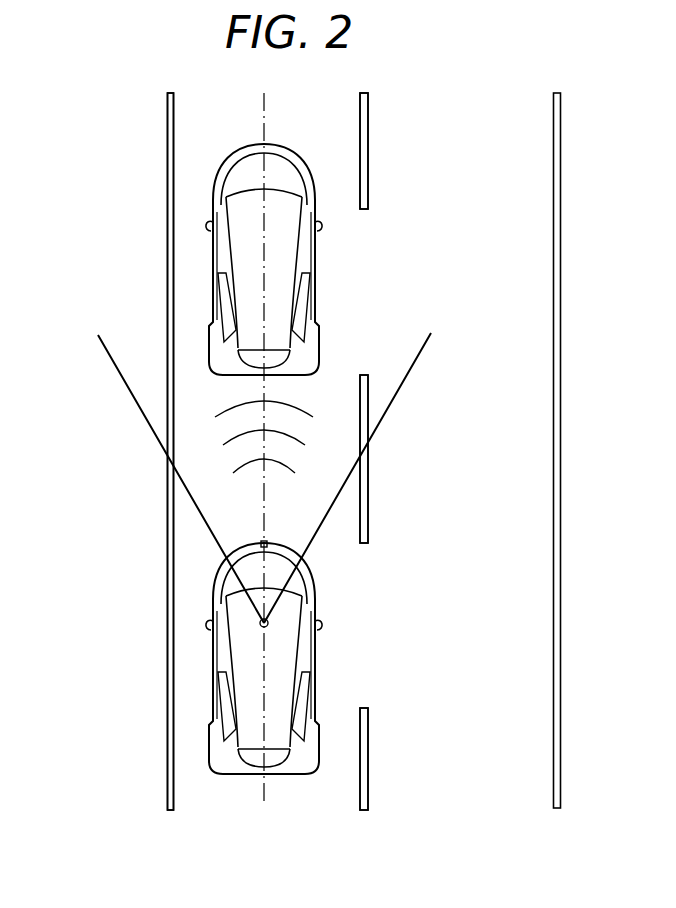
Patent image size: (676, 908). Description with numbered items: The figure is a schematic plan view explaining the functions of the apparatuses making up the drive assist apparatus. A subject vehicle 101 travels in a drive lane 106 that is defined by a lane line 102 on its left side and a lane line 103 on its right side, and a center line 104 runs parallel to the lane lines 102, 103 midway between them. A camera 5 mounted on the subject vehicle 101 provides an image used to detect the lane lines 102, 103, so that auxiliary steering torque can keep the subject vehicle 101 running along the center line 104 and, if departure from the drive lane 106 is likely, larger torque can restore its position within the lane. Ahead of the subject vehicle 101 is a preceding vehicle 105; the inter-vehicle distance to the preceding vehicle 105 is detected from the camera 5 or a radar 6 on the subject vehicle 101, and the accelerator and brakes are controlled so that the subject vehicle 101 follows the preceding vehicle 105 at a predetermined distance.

The camera 5 is at (259, 624).
The radar 6 is at (257, 544).
The subject vehicle 101 is at (290, 647).
The lane line 102 is at (167, 727).
The lane line 103 is at (368, 738).
The center line 104 is at (258, 800).
The preceding vehicle 105 is at (290, 257).
The drive lane 106 is at (207, 113).